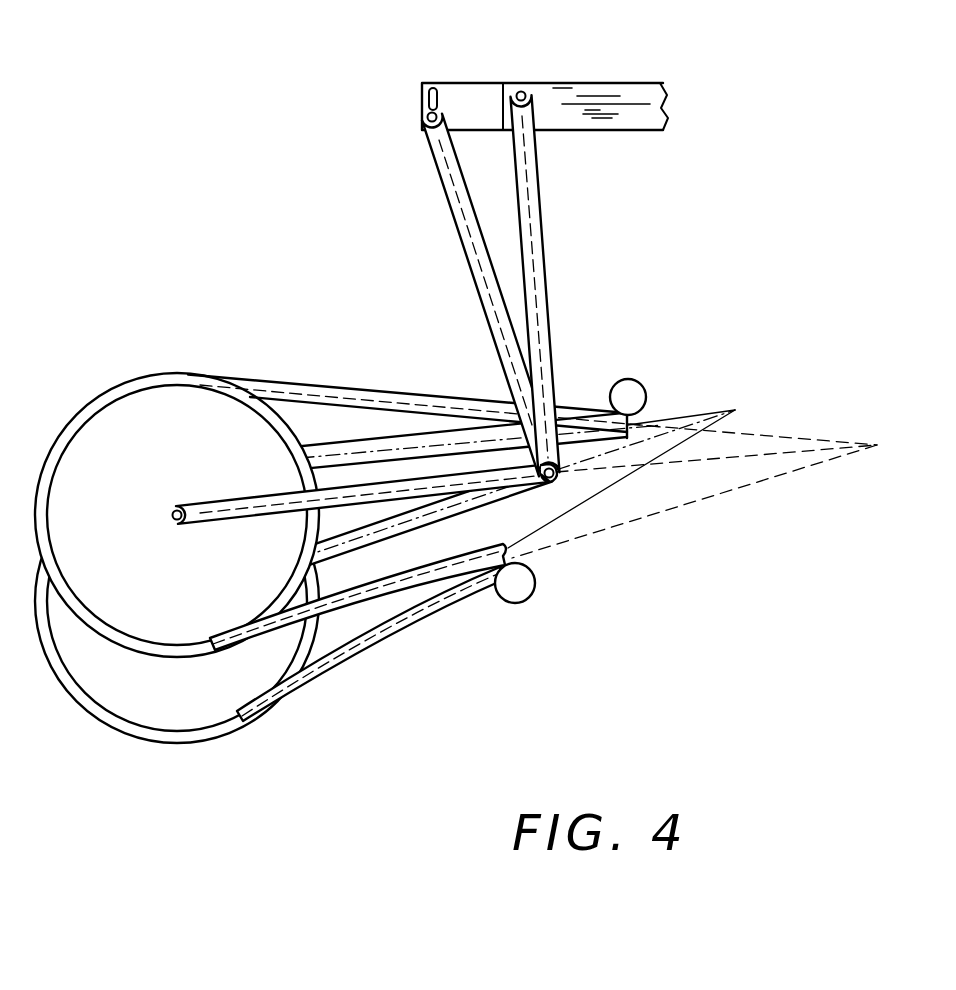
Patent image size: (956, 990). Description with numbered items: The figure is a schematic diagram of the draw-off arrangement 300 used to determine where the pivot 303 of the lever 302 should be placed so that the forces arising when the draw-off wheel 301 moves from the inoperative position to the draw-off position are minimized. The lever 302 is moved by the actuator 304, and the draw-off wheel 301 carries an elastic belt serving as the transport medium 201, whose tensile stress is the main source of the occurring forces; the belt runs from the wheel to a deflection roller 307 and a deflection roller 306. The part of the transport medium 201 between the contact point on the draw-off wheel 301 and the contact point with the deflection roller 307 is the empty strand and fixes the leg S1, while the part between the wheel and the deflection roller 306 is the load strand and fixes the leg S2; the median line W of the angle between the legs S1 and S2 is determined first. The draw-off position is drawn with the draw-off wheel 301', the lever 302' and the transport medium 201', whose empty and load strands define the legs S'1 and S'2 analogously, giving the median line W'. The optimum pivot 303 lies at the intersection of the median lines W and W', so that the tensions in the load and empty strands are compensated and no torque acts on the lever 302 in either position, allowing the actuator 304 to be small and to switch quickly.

The sheet feeding / transport apparatus 300 is at (273, 358).
The draw-off wheel 301 is at (177, 495).
The draw-off wheel in draw-off position 301' is at (177, 635).
The lever 302 is at (362, 425).
The lever in draw-off position 302' is at (363, 606).
The pivot 303 is at (552, 484).
The actuator 304 is at (598, 92).
The deflection roller 306 is at (516, 585).
The deflection roller 307 is at (622, 392).
The transport medium 201 is at (425, 525).
The transport medium in draw-off position 201' is at (412, 516).
The median line W is at (716, 493).
The median line W' is at (645, 402).
The leg S1 is at (810, 440).
The leg S2 is at (783, 475).
The leg S'1 is at (621, 430).
The leg S'2 is at (713, 397).